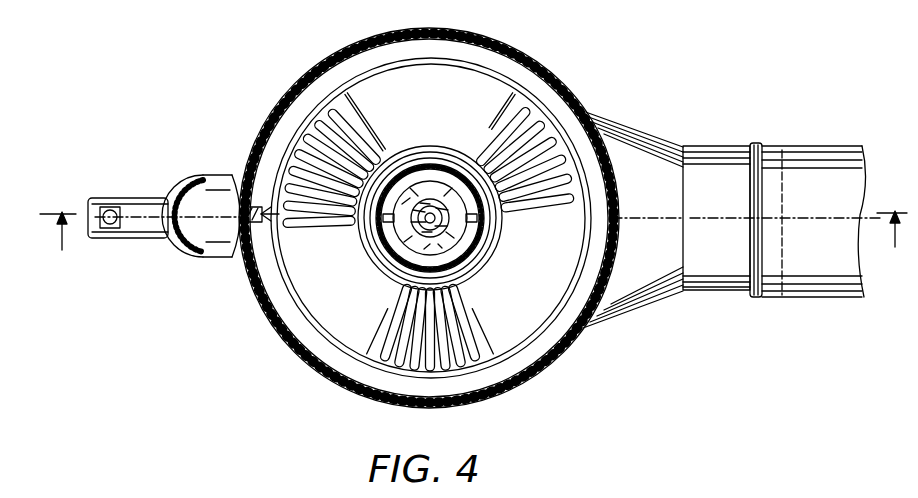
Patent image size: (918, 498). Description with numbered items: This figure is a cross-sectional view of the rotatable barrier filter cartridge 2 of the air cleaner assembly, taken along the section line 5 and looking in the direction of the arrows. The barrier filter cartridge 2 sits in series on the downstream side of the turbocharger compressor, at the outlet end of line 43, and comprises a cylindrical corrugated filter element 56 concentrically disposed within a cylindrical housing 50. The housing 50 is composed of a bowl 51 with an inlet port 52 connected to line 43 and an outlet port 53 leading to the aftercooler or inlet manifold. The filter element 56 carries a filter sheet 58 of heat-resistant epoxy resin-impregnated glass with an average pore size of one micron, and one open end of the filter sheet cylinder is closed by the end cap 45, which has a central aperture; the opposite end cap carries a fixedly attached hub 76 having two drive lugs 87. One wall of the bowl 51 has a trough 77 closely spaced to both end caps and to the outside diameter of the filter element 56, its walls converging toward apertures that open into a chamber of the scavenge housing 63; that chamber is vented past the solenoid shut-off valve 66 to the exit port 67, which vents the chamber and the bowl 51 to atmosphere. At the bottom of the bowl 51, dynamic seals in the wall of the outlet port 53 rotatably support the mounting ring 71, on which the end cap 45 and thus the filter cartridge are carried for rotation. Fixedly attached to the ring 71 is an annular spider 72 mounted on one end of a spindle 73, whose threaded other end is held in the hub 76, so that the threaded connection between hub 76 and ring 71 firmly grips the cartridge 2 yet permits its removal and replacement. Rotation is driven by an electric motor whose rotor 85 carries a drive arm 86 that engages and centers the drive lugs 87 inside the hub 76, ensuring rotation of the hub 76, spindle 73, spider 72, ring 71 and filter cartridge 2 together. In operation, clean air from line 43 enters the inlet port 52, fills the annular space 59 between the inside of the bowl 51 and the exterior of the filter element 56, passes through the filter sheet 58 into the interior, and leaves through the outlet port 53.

The rotatable barrier filter cartridge 2 is at (334, 266).
The section line 5- 5 is at (473, 239).
The line 43 is at (830, 145).
The end cap 45 is at (320, 333).
The cylindrical housing 50 is at (567, 72).
The bowl 51 is at (268, 128).
The inlet port 52 is at (637, 296).
The outlet port 53 is at (403, 235).
The cylindrical corrugated filter element 56 is at (449, 357).
The filter sheet 58 is at (502, 322).
The annular space 59 is at (333, 70).
The scavenge housing 63 is at (202, 181).
The solenoid shut-off valve 66 is at (115, 198).
The exit port 67 is at (201, 257).
The mounting ring 71 is at (524, 167).
The annular spider 72 is at (433, 223).
The spindle 73 is at (412, 218).
The hub 76 is at (409, 256).
The trough 77 is at (256, 230).
The rotor 85 is at (427, 165).
The drive arm 86 is at (412, 175).
The drive lugs 87 is at (438, 167).